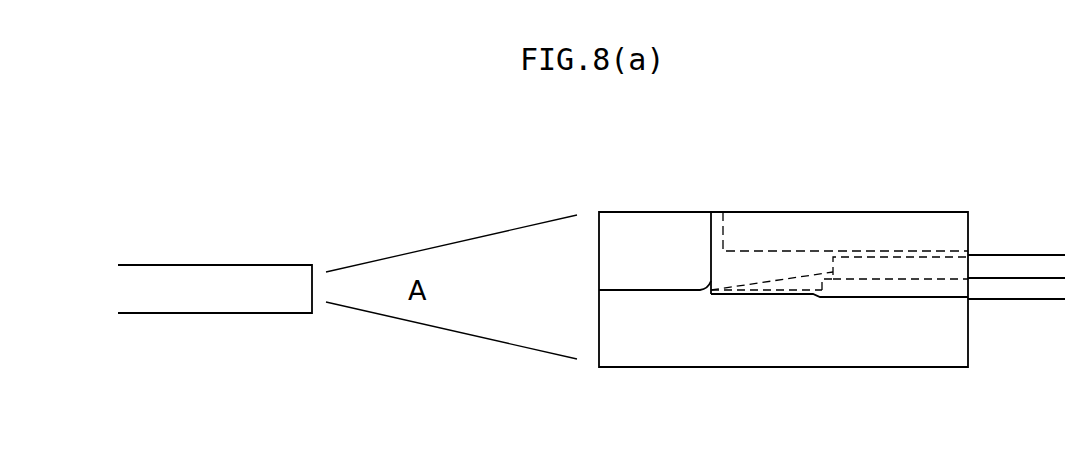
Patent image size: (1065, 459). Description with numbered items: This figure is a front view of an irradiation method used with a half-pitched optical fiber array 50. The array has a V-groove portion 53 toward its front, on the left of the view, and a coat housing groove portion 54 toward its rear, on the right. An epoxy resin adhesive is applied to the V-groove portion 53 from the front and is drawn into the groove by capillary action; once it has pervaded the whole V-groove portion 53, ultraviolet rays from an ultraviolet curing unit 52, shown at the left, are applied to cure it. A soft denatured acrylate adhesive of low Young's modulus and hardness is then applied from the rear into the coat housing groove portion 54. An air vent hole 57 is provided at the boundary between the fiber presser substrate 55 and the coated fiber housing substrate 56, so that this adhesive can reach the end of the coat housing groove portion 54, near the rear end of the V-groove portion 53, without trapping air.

The half-pitched optical fiber array 50 is at (690, 196).
The ultraviolet curing unit 52 is at (208, 278).
The V-groove portion 53 is at (642, 287).
The coat housing groove portion 54 is at (753, 268).
The fiber presser substrate 55 is at (650, 222).
The coated fiber housing substrate 56 is at (943, 229).
The air vent hole 57 is at (714, 224).